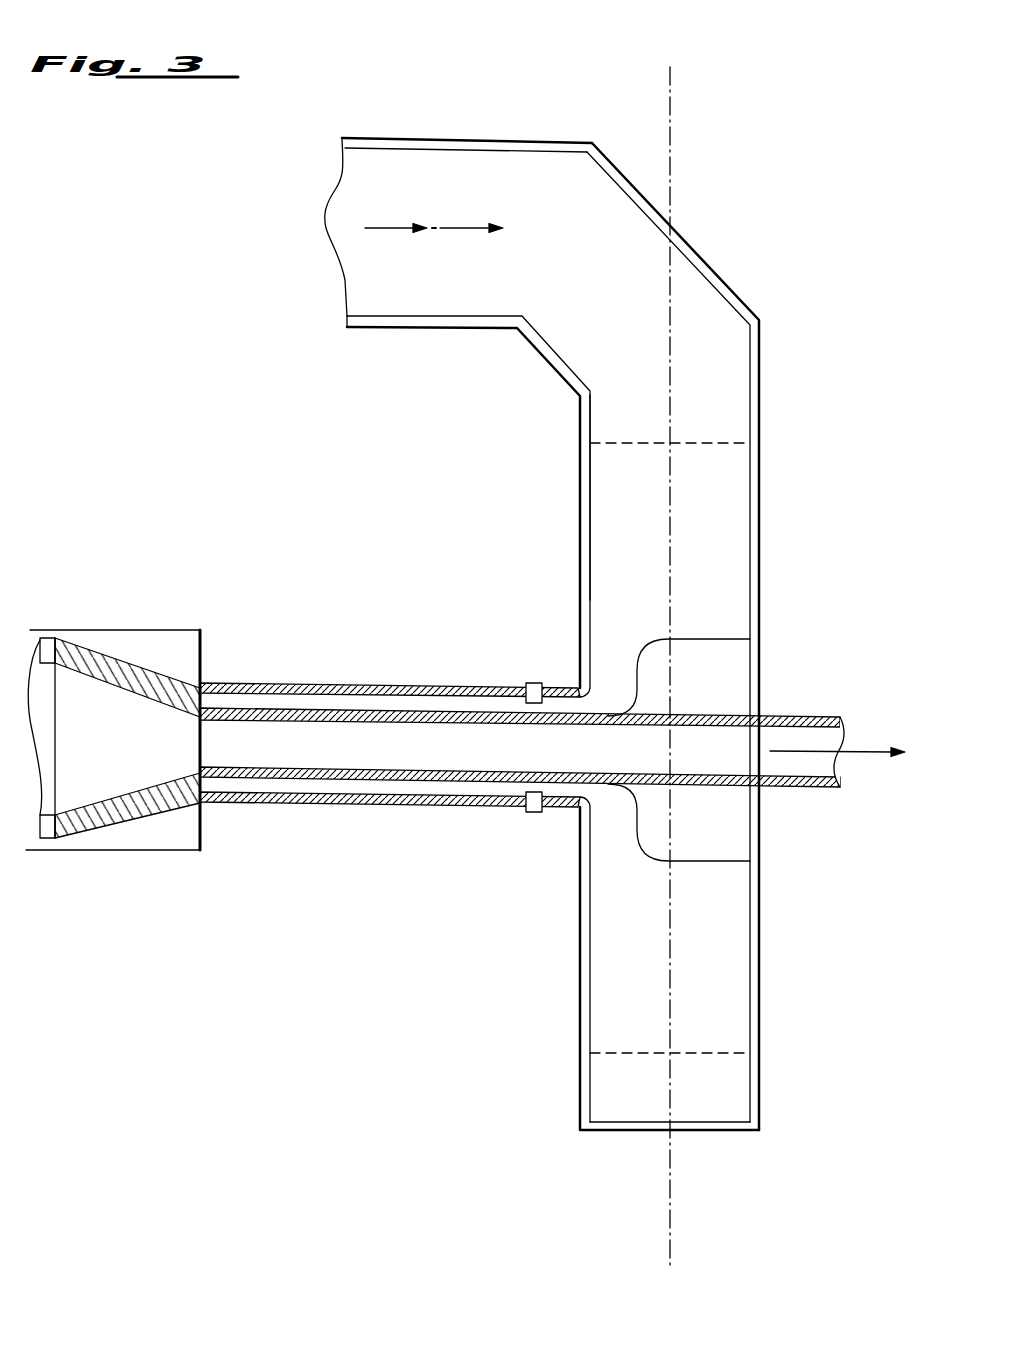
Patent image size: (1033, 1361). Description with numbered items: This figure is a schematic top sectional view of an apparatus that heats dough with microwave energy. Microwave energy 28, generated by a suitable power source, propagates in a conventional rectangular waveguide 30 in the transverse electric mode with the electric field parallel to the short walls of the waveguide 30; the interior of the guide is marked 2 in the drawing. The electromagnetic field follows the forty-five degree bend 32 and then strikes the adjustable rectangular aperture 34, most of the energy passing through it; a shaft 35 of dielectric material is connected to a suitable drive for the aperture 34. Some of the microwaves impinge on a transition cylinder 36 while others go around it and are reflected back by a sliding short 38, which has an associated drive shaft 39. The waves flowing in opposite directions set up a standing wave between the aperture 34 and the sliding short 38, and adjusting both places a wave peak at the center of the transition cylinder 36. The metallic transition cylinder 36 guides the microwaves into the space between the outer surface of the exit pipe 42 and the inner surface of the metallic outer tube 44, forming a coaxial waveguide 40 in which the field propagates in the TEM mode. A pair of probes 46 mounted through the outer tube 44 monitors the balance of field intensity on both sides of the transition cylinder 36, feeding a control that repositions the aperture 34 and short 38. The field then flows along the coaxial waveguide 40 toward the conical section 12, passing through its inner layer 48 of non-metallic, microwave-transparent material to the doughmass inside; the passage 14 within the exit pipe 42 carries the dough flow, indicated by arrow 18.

The chamber 2 is at (590, 277).
The conical section 12 is at (147, 610).
The inner passage 14 is at (325, 745).
The gas flow direction 18 is at (865, 752).
The microwave energy 28 is at (460, 228).
The rectangular waveguide 30 is at (582, 418).
The 45 degree bend 32 is at (703, 257).
The adjustable rectangular aperture 34 is at (732, 445).
The shaft 35 is at (670, 135).
The transition cylinder 36 is at (640, 846).
The sliding short 38 is at (730, 1055).
The drive shaft 39 is at (667, 1238).
The coaxial waveguide 40 is at (325, 802).
The exit pipe 42 is at (395, 718).
The outer tube 44 is at (268, 682).
The probes 46 is at (530, 683).
The inner layer 48 is at (130, 816).